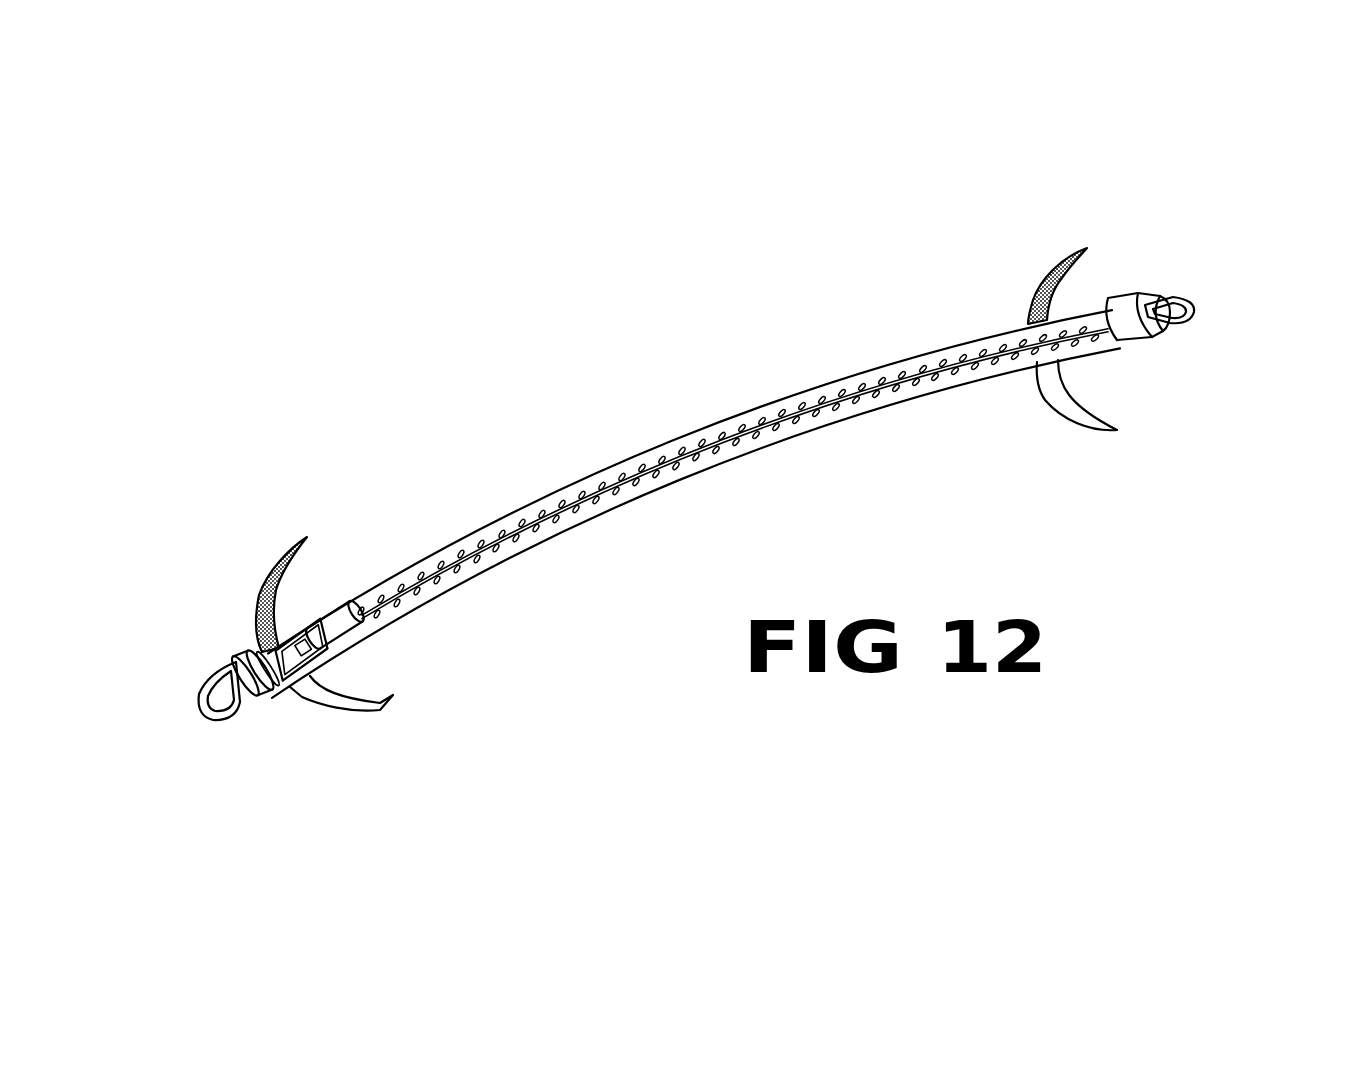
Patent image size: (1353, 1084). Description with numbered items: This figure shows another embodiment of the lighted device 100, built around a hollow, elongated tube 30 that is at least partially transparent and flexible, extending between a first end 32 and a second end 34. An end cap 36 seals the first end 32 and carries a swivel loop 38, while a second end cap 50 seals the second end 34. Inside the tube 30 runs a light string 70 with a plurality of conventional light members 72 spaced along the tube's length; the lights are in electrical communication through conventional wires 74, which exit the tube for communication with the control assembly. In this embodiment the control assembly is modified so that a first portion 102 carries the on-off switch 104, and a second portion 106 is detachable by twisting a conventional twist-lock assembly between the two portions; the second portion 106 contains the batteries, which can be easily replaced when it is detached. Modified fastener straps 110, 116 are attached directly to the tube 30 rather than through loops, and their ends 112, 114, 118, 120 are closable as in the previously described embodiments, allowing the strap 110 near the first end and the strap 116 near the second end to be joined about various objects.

The device 100 is at (580, 417).
The tube member 30 is at (750, 412).
The first end 32 is at (252, 646).
The second end 34 is at (1110, 313).
The end cap 36 is at (232, 662).
The swivel loop 38 is at (1193, 318).
The second end cap 50 is at (1140, 300).
The light string 70 is at (678, 455).
The light members 72 is at (587, 509).
The wires 74 is at (264, 652).
The first portion of the control assembly 102 is at (297, 645).
The on-off switch 104 is at (320, 650).
The second portion of the control assembly 106 is at (340, 623).
The fastener strap 110 is at (258, 572).
The end of fastener strap 112 is at (309, 536).
The end of fastener strap 114 is at (388, 705).
The fastener strap 116 is at (1032, 294).
The end of fastener strap 118 is at (1113, 246).
The end of fastener strap 120 is at (1062, 418).